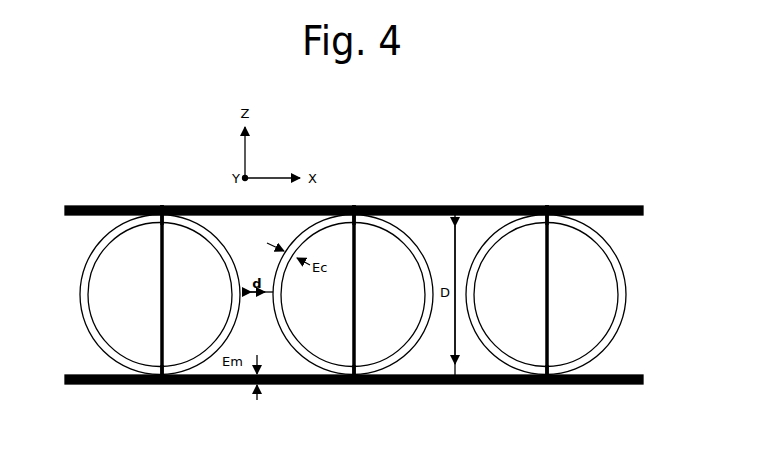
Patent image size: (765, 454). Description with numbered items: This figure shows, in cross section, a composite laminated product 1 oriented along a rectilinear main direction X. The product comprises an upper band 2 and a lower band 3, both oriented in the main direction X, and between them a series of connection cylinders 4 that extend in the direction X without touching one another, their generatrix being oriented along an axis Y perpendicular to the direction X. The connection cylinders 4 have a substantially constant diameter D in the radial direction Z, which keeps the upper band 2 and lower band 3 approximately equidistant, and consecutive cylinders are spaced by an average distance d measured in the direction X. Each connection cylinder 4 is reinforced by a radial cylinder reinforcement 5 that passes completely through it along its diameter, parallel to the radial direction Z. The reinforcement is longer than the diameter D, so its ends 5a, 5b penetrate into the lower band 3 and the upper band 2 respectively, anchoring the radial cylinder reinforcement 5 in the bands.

The composite laminated product 1 is at (447, 183).
The upper band 2 is at (88, 205).
The lower band 3 is at (107, 383).
The connection cylinder 4 is at (87, 282).
The radial cylinder reinforcement 5 is at (164, 340).
The end of radial cylinder reinforcement 5a is at (162, 372).
The end of radial cylinder reinforcement 5b is at (163, 205).